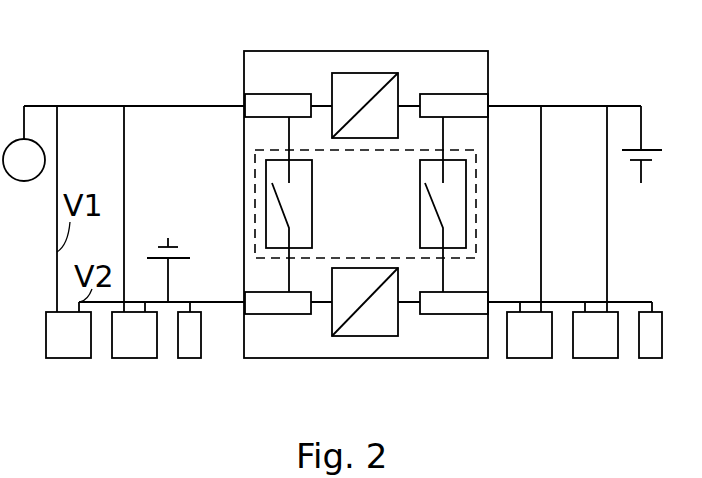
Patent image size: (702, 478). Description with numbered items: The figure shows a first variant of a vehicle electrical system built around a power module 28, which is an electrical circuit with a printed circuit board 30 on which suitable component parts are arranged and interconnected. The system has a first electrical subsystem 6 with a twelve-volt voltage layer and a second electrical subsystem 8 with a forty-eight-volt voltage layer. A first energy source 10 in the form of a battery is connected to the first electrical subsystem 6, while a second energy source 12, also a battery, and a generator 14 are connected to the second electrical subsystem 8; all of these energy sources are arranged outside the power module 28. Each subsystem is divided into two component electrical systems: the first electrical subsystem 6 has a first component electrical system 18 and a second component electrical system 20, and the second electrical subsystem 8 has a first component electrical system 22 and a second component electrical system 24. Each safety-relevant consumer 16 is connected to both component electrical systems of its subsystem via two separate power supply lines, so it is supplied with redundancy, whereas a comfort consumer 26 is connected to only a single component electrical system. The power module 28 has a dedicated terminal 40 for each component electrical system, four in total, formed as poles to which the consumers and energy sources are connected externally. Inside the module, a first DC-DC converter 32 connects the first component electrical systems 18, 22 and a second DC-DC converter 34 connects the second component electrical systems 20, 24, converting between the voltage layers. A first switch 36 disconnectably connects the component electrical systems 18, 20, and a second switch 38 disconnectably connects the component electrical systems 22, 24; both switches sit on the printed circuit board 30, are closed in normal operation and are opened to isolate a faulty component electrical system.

The first electrical subsystem 6 is at (526, 70).
The second electrical subsystem 8 is at (100, 70).
The first energy source 10 is at (645, 162).
The second energy source 12 is at (169, 240).
The generator 14 is at (9, 176).
The safety-relevant consumer 16 is at (58, 359).
The first component electrical system 18 is at (580, 106).
The second component electrical system 20 is at (560, 302).
The first component electrical system 22 is at (150, 106).
The second component electrical system 24 is at (213, 302).
The comfort consumer 26 is at (190, 359).
The power module 28 is at (244, 70).
The printed circuit board 30 is at (255, 162).
The first DC-DC converter 32 is at (362, 73).
The second DC-DC converter 34 is at (365, 337).
The first switch 36 is at (420, 241).
The second switch 38 is at (313, 182).
The terminal 40 is at (278, 94).